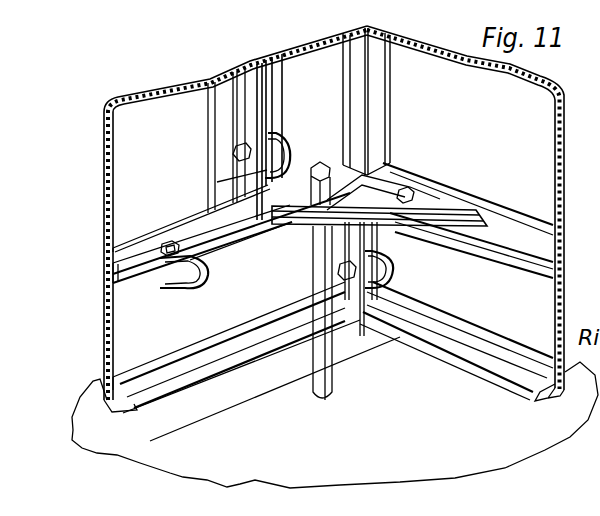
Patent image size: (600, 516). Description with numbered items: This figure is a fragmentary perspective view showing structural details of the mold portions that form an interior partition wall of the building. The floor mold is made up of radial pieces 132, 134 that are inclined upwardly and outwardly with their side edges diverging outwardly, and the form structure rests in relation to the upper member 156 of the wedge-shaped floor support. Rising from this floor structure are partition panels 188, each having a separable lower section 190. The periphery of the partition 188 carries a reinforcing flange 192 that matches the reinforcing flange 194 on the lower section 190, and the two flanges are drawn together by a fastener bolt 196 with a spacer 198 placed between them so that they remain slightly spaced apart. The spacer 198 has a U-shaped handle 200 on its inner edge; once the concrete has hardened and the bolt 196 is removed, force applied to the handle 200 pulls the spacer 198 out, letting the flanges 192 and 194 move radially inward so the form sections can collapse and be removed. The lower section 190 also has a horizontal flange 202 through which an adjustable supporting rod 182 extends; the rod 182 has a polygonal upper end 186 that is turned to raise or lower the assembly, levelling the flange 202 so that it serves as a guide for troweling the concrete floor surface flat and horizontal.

The radial piece 132 is at (95, 413).
The radial piece 134 is at (493, 442).
The upper member 156 is at (160, 459).
The adjustable supporting rod 182 is at (330, 378).
The polygonal upper end 186 is at (321, 165).
The partition 188 is at (293, 72).
The lower section 190 is at (123, 320).
The reinforcing flange 192 is at (137, 252).
The reinforcing flange 194 is at (147, 280).
The fastener bolt 196 is at (170, 243).
The spacer 198 is at (220, 253).
The U-shaped handle 200 is at (203, 283).
The flange 202 is at (226, 383).